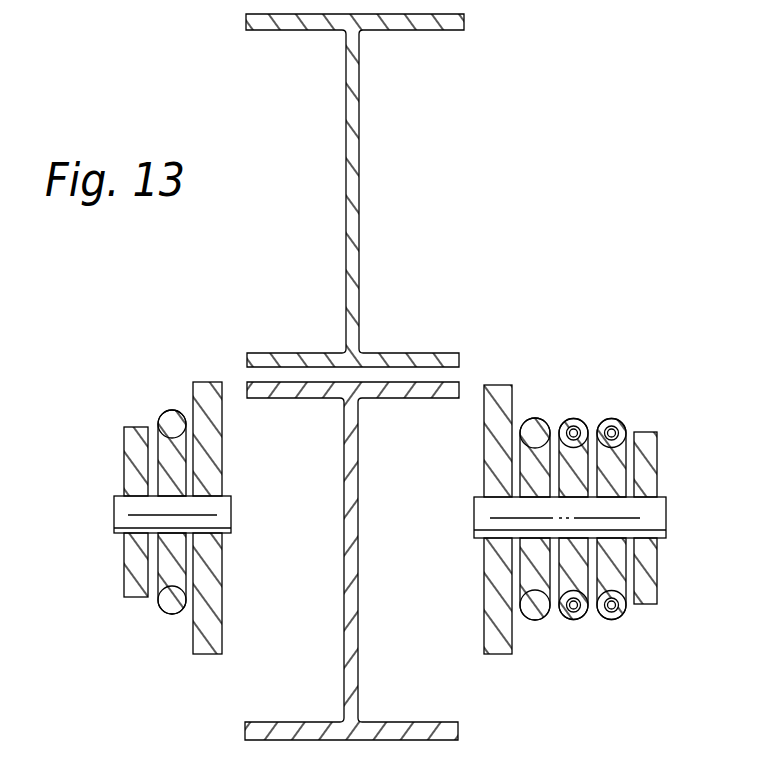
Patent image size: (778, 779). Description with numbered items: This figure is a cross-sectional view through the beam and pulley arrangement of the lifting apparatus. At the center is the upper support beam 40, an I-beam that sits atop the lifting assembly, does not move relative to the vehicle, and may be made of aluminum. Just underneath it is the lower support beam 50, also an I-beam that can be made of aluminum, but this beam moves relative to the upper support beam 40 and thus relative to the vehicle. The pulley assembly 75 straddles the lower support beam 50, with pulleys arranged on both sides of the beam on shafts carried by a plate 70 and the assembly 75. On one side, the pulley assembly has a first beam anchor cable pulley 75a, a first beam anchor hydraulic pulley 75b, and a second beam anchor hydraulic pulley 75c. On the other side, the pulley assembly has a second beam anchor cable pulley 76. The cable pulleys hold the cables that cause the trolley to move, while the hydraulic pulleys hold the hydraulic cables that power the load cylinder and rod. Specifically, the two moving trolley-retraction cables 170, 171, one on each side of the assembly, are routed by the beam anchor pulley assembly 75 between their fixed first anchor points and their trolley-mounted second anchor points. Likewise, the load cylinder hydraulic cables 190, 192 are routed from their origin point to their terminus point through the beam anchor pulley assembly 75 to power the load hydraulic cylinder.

The upper support beam 40 is at (358, 147).
The lower support beam 50 is at (360, 478).
The support plate 70 is at (497, 386).
The pulley assembly 75 is at (657, 455).
The first beam anchor cable pulley 75a is at (537, 580).
The first beam anchor hydraulic pulley 75b is at (573, 578).
The second beam anchor hydraulic pulley 75c is at (612, 578).
The second beam anchor cable pulley 76 is at (173, 573).
The moving trolley-retraction cable 170 is at (533, 419).
The moving trolley-retraction cable 171 is at (171, 412).
The load cylinder hydraulic cable 190 is at (615, 420).
The load cylinder hydraulic cable 192 is at (578, 420).